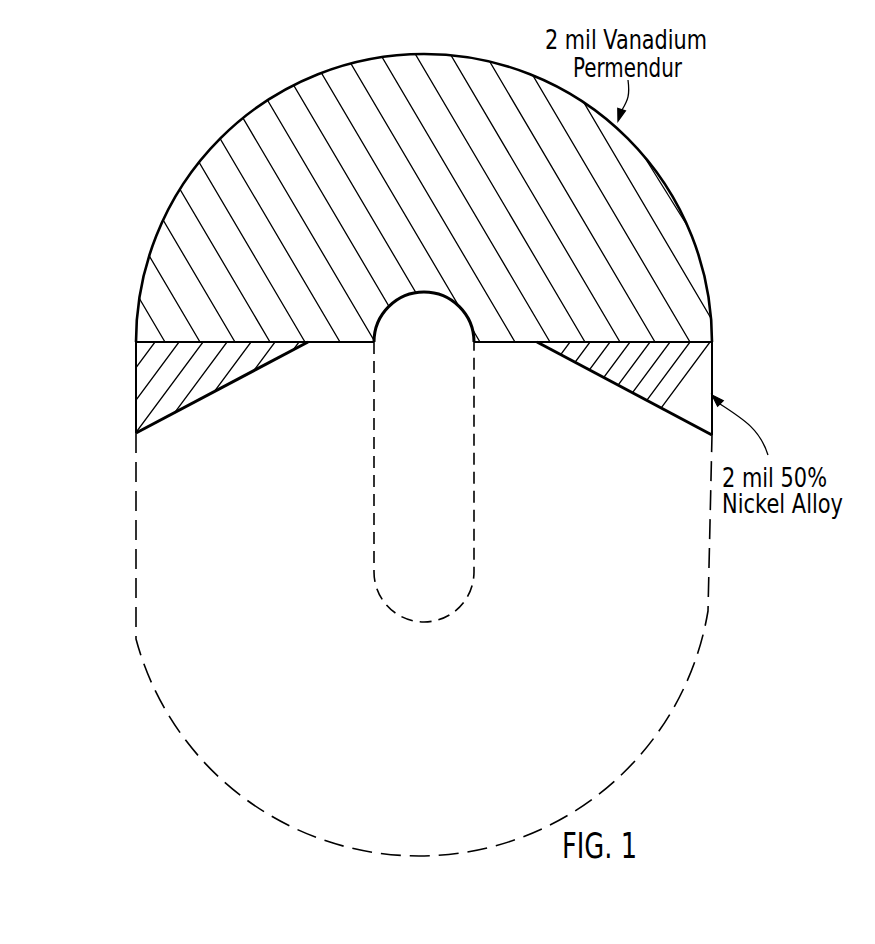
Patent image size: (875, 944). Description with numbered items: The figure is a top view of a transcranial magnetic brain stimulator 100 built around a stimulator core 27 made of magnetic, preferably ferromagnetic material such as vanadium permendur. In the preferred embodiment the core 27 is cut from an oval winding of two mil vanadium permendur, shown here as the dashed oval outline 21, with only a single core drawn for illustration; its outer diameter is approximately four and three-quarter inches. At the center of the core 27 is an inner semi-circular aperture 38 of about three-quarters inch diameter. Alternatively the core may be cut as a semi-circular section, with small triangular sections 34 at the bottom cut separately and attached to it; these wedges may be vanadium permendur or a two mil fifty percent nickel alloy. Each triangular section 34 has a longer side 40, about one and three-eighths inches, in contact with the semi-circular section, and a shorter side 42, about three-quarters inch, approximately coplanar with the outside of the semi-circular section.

The magnetic head pole tip structure 100 is at (238, 124).
The stimulator core 27 is at (147, 222).
The longer side 40 is at (137, 303).
The shorter side 42 is at (115, 397).
The triangular sections 34 is at (203, 426).
The slider body 21 is at (277, 420).
The inner semi-circular aperture 38 is at (373, 388).